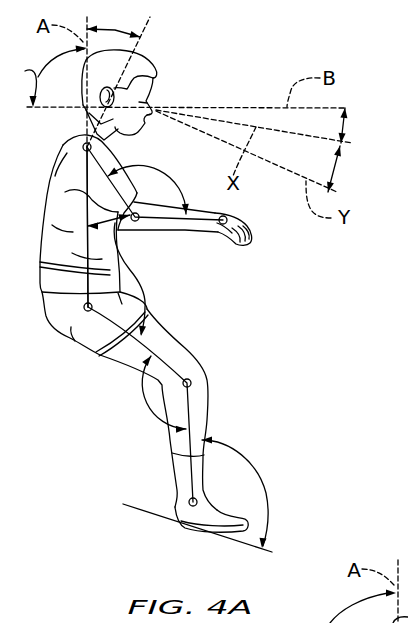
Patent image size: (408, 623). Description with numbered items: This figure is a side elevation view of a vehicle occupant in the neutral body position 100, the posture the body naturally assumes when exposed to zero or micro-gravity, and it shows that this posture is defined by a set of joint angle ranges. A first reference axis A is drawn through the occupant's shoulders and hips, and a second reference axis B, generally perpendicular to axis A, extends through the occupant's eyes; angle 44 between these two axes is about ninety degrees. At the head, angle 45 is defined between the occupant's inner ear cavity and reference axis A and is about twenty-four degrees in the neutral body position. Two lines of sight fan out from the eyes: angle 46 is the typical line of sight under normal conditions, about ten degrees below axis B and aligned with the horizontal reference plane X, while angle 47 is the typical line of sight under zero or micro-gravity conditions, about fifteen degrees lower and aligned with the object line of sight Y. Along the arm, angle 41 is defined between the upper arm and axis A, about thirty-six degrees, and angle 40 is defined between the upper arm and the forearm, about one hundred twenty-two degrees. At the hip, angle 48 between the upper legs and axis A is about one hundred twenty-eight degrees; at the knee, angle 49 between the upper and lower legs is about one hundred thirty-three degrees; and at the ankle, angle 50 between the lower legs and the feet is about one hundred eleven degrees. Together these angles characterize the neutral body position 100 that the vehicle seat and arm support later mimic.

The neutral body position 100 is at (262, 64).
The angle between upper arm and forearm 40 is at (163, 180).
The angle between upper arm and first reference axis 41 is at (97, 248).
The angle between reference axis A and reference axis B 44 is at (25, 71).
The angle between inner ear cavity and reference axis A 45 is at (115, 30).
The typical line of sight under normal conditions 46 is at (347, 127).
The typical line of sight under zero or micro-gravity conditions 47 is at (336, 163).
The angle between upper legs and first reference axis 48 is at (148, 286).
The angle between upper legs and lower legs 49 is at (141, 400).
The angle between lower legs and feet 50 is at (261, 477).